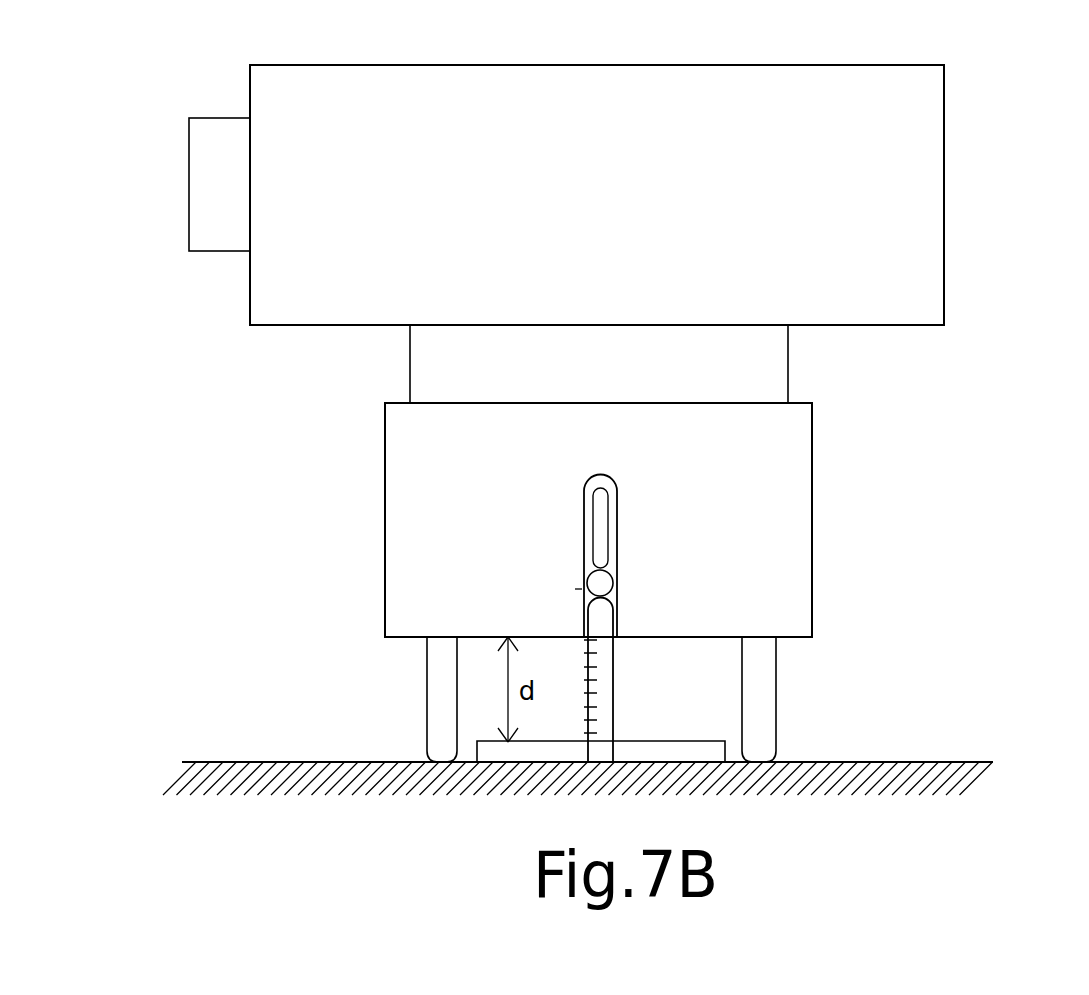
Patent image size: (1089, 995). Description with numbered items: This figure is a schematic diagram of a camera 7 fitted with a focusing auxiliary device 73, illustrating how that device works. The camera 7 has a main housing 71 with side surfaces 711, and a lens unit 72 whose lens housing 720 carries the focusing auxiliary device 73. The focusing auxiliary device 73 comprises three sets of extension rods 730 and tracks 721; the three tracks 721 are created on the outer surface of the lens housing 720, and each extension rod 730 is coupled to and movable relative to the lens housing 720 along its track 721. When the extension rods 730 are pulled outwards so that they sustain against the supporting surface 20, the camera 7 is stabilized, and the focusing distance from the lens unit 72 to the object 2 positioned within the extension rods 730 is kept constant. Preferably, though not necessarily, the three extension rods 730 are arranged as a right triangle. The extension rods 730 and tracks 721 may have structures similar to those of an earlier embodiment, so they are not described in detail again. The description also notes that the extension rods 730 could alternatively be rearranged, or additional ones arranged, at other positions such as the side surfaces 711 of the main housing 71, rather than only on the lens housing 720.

The camera 7 is at (996, 216).
The main housing 71 is at (808, 92).
The side surface of the main housing 711 is at (470, 85).
The lens unit 72 is at (822, 444).
The lens housing 720 is at (798, 543).
The track 721 is at (582, 528).
The focusing auxiliary device 73 is at (578, 565).
The extension rod 730 is at (443, 710).
The object 2 is at (643, 752).
The supporting surface 20 is at (913, 760).